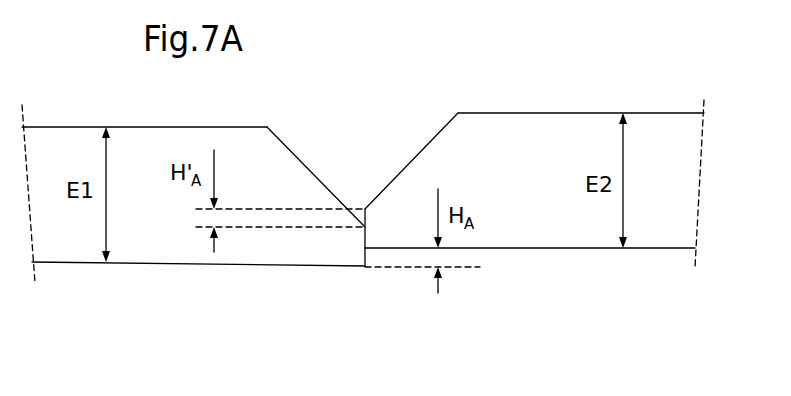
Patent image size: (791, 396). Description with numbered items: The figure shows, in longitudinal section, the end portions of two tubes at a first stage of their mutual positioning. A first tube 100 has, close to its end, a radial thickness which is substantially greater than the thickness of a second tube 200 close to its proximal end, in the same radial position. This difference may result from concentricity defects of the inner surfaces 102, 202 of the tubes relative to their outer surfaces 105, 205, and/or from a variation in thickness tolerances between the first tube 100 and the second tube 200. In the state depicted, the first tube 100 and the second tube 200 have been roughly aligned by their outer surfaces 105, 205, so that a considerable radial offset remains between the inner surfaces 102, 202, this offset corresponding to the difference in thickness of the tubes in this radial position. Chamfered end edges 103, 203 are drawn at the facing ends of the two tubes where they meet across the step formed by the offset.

The first tube 100 is at (70, 248).
The inner surface 102 is at (139, 266).
The chamfered edge of first part 103 is at (301, 160).
The outer surface 105 is at (72, 127).
The second tube 200 is at (683, 183).
The inner surface 202 is at (655, 250).
The chamfered edge of second part 203 is at (415, 156).
The outer surface 205 is at (660, 113).